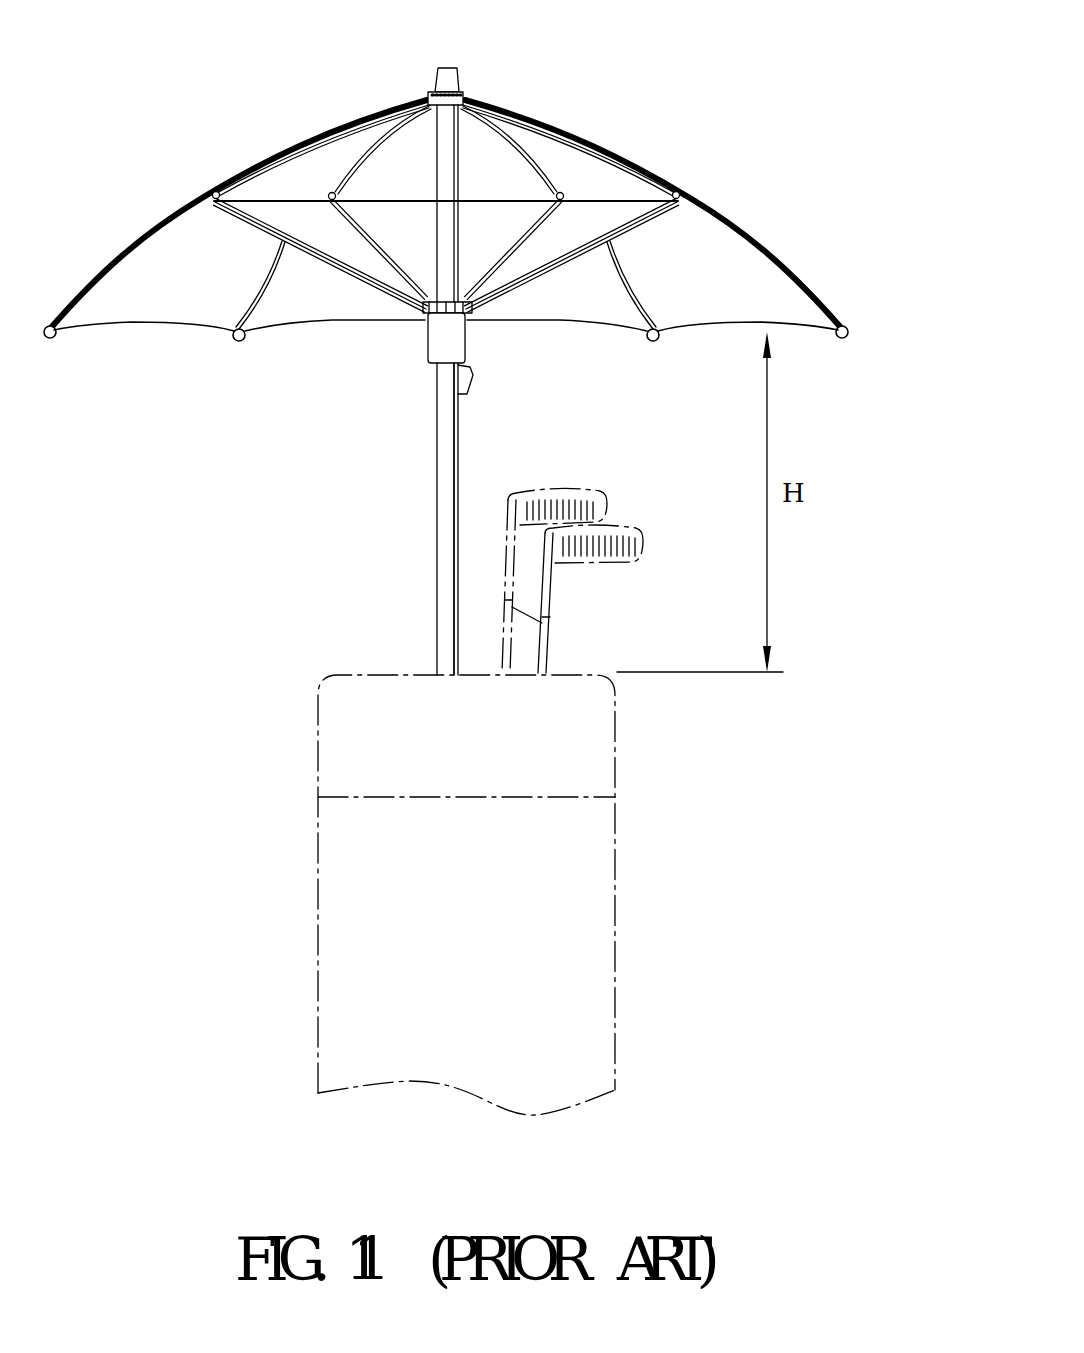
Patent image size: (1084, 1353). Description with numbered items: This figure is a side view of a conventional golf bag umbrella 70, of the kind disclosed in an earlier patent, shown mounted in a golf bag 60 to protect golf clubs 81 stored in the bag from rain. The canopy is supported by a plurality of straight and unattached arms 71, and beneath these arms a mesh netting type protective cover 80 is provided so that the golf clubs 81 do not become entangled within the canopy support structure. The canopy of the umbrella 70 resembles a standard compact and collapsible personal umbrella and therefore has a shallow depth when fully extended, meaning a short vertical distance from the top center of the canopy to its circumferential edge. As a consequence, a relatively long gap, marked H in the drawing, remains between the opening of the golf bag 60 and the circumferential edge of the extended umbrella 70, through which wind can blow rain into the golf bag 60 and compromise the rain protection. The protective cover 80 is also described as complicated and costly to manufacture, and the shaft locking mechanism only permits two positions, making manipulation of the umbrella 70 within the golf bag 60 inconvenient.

The umbrella 70 is at (595, 116).
The arms 71 is at (513, 230).
The protective cover 80 is at (620, 200).
The golf clubs 81 is at (550, 595).
The golf bag 60 is at (617, 930).